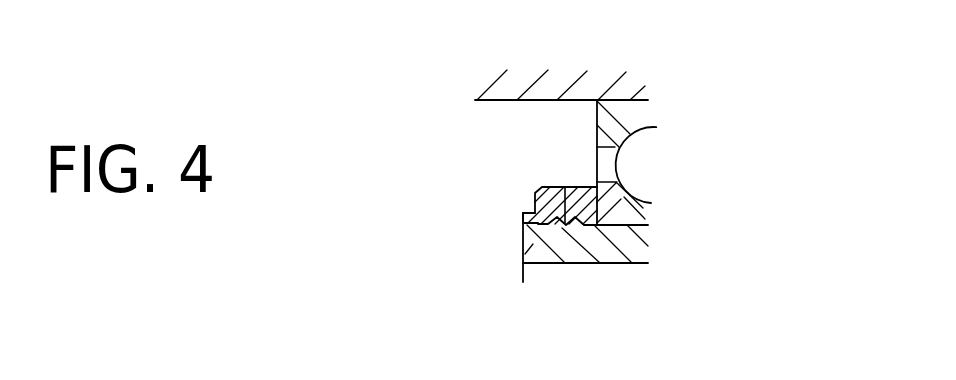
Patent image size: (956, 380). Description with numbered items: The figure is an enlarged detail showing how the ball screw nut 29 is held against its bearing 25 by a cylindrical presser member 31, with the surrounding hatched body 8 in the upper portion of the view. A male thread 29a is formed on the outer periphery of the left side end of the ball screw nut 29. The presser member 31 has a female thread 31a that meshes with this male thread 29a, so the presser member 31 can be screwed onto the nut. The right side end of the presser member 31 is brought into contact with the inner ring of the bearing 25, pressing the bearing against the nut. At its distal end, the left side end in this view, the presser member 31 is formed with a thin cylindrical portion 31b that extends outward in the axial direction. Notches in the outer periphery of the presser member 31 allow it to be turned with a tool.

The housing wall 8 is at (512, 83).
The bearing 25 is at (628, 125).
The ball screw nut 29 is at (522, 252).
The male thread 29a is at (554, 230).
The presser member 31 is at (537, 188).
The female thread 31a is at (565, 188).
The thin cylindrical portion 31b is at (520, 217).